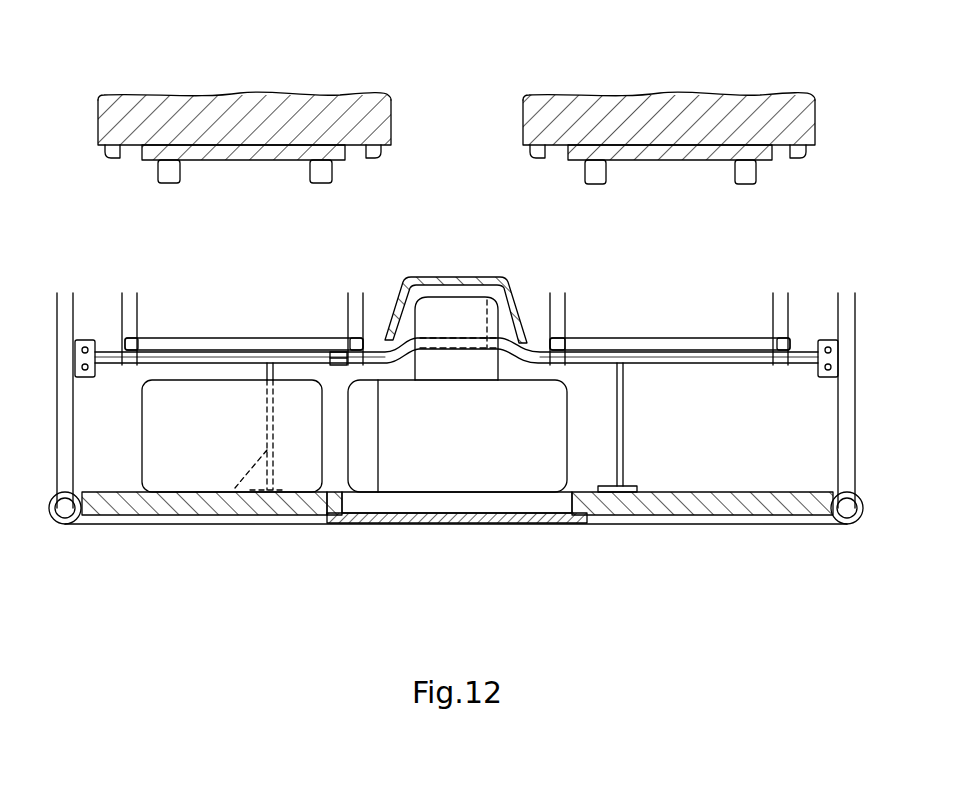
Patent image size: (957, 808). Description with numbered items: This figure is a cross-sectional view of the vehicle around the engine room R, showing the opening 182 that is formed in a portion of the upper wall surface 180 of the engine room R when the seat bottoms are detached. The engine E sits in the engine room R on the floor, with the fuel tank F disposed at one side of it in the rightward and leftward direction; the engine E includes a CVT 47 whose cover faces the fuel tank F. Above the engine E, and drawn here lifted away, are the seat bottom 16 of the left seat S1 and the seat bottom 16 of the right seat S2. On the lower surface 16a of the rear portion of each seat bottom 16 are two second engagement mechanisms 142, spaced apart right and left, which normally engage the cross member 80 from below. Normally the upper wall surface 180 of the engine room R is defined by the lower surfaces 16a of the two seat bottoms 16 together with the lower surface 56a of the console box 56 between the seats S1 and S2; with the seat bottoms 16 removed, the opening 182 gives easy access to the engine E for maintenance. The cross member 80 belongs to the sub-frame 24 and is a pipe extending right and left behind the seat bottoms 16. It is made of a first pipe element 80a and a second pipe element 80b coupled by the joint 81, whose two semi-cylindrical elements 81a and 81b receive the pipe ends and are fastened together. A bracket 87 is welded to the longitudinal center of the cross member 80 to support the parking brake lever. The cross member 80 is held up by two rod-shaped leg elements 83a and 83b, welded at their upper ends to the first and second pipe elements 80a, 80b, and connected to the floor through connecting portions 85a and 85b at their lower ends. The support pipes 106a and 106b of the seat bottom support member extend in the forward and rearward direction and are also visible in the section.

The seat S1 is at (670, 92).
The seat S2 is at (240, 92).
The seat bottom 16 is at (165, 92).
The lower surface 16a is at (222, 161).
The second engagement mechanism 142 is at (167, 182).
The console box 56 is at (457, 276).
The lower surface 56a is at (458, 337).
The bracket 87 is at (488, 298).
The joint 81 is at (338, 350).
The element 81a is at (337, 352).
The element 81b is at (338, 345).
The support pipe 106a is at (132, 335).
The support pipe 106b is at (360, 334).
The opening 182 is at (239, 331).
The cross member 80 is at (677, 360).
The first pipe element 80a is at (803, 360).
The second pipe element 80b is at (128, 357).
The sub-frame 24 is at (707, 366).
The fuel tank F is at (185, 458).
The engine E is at (530, 458).
The engine room R is at (435, 452).
The CVT 47 is at (372, 473).
The upper wall surface 180 is at (445, 287).
The leg element 83a is at (622, 440).
The leg element 83b is at (224, 516).
The connecting portion 85a is at (620, 440).
The connecting portion 85b is at (282, 500).